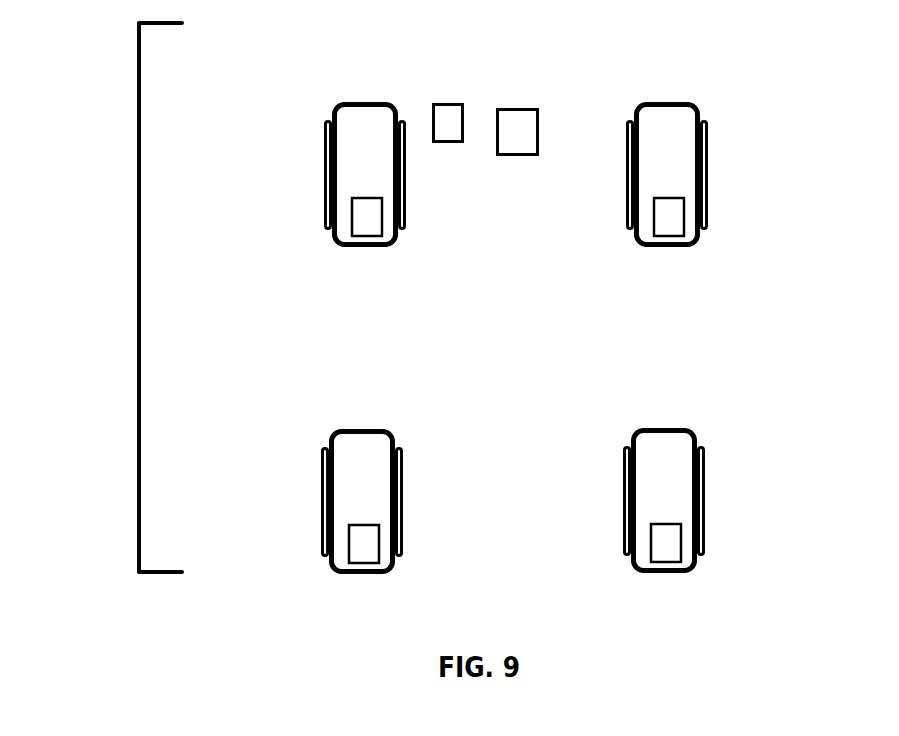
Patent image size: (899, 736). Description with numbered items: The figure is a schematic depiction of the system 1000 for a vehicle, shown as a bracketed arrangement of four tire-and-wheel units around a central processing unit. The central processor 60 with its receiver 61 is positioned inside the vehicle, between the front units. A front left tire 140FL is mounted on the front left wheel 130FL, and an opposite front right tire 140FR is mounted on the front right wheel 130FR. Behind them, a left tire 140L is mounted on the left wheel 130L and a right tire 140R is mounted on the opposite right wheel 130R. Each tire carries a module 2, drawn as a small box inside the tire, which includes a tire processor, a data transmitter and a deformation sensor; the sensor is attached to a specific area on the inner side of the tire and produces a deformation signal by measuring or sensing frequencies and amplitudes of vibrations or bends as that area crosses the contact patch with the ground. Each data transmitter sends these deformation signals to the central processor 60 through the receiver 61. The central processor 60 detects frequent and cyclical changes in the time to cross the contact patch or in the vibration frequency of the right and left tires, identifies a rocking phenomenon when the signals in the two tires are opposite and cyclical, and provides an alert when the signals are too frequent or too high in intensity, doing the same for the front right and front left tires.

The system 1000 is at (125, 363).
The front left tire 140FL is at (367, 100).
The front right tire 140FR is at (670, 98).
The left tire 140L is at (362, 427).
The right tire 140R is at (665, 425).
The front left wheel 130FL is at (322, 203).
The front right wheel 130FR is at (710, 175).
The left wheel 130L is at (318, 532).
The right wheel 130R is at (708, 502).
The module 2 is at (372, 225).
The central processor 60 is at (528, 97).
The receiver 61 is at (460, 90).